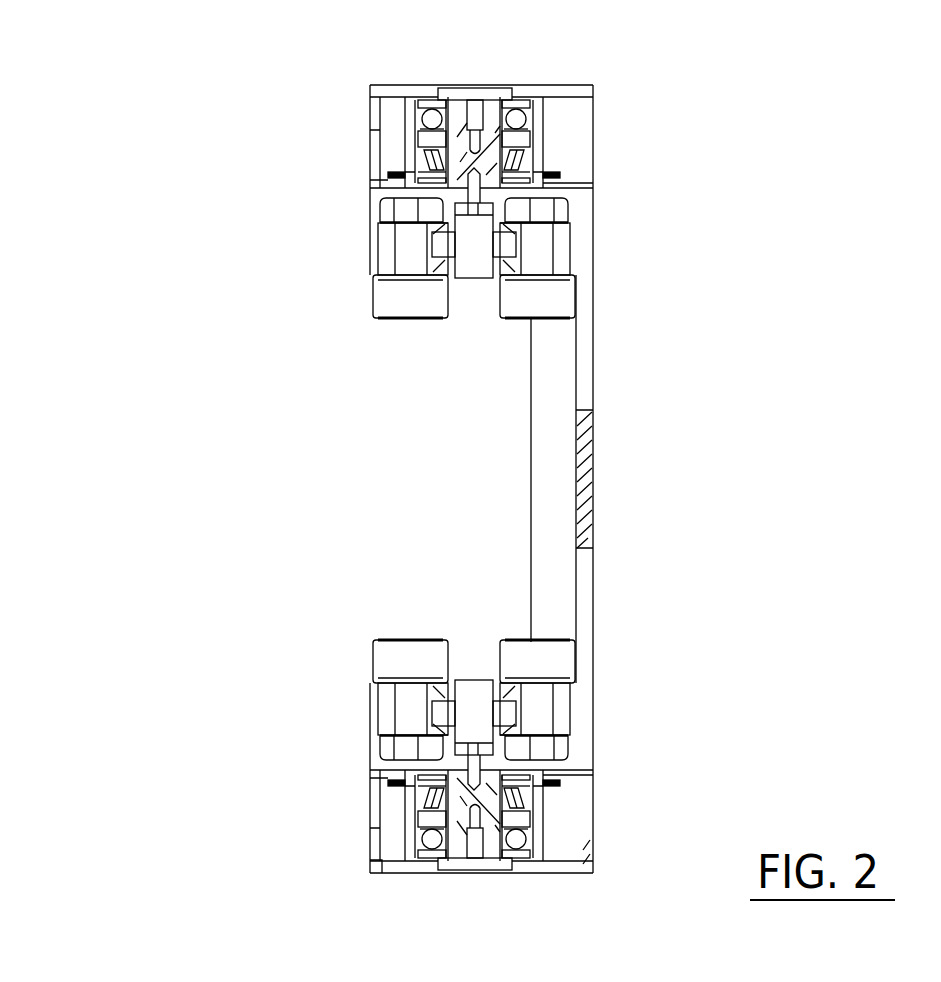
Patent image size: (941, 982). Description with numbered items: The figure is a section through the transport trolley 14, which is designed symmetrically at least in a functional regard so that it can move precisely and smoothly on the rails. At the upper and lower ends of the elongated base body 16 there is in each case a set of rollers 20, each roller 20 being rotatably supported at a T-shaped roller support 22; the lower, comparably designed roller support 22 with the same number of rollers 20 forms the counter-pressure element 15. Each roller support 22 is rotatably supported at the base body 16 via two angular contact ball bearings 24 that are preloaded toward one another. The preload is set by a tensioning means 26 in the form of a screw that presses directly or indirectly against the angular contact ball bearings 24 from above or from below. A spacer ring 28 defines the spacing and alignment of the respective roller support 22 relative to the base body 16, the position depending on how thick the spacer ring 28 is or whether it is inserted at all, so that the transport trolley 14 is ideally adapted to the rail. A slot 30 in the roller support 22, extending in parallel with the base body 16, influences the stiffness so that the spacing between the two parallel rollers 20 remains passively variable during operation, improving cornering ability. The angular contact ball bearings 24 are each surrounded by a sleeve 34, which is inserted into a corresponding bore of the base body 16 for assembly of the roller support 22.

The transport trolley 14 is at (178, 190).
The counter-pressure element 15 is at (344, 612).
The base body 16 is at (556, 505).
The roller 20 is at (472, 240).
The roller support 22 is at (558, 178).
The angular contact ball bearing 24 is at (530, 123).
The tensioning means 26 is at (474, 108).
The spacer ring 28 is at (388, 178).
The slot 30 is at (477, 190).
The sleeve 34 is at (413, 146).